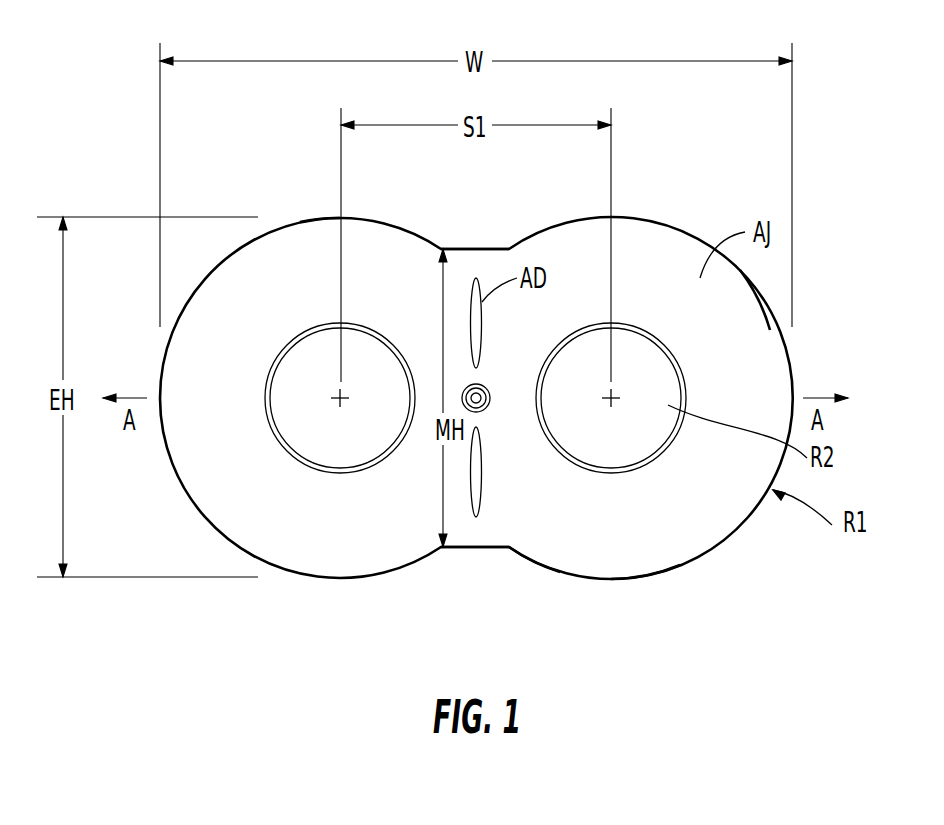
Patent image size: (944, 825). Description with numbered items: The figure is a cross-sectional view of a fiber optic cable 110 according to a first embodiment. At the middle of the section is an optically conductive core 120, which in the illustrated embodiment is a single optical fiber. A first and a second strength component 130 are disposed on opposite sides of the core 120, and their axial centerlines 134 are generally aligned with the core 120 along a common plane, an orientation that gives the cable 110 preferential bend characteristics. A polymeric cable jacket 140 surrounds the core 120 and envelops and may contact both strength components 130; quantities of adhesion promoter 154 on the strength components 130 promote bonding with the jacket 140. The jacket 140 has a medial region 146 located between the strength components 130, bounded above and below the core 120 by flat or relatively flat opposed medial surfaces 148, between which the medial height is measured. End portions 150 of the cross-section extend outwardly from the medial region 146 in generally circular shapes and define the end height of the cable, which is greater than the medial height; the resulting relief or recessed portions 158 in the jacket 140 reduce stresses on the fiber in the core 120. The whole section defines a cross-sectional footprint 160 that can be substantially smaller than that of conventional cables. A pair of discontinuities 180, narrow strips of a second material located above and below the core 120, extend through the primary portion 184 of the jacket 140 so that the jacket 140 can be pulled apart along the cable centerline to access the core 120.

The fiber optic cable 110 is at (115, 148).
The optically conductive core 120 is at (490, 401).
The strength component 130 is at (650, 373).
The axial centerline 134 is at (340, 400).
The cable jacket 140 is at (757, 322).
The medial region 146 is at (487, 497).
The medial surface 148 is at (473, 249).
The end portion 150 is at (683, 215).
The adhesion promoter 154 is at (262, 390).
The relief or recessed portion 158 is at (508, 228).
The cross-sectional footprint 160 is at (657, 575).
The discontinuity 180 is at (482, 313).
The primary portion 184 is at (308, 231).